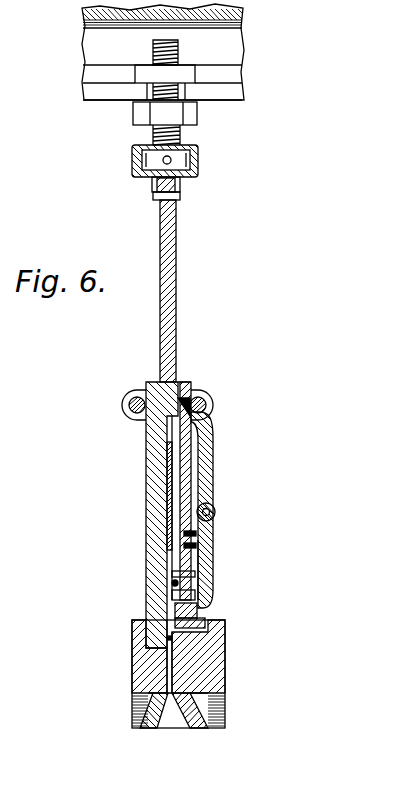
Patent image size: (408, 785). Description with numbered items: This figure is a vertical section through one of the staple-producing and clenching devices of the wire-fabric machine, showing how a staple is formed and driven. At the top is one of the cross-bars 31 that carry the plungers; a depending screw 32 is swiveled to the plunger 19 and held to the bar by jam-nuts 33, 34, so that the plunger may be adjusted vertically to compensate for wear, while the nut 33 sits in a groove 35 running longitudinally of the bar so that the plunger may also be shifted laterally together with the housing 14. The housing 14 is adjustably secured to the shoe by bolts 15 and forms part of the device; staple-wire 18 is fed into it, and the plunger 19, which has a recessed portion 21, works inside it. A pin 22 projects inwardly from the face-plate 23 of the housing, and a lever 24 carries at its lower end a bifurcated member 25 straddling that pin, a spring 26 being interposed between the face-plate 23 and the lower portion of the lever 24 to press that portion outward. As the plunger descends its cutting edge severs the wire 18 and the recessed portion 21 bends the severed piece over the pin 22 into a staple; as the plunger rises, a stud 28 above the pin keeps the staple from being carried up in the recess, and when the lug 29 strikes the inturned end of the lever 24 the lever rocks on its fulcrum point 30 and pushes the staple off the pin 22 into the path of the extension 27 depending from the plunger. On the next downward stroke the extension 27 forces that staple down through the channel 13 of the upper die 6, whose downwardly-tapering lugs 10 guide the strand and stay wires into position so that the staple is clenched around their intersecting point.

The upper die 6 is at (140, 663).
The downwardly-tapering lugs 10 is at (198, 722).
The channel 13 is at (170, 675).
The housing 14 is at (147, 527).
The bolts 15 is at (128, 405).
The staple-wire 18 is at (172, 583).
The plunger 19 is at (163, 333).
The recessed portion 21 is at (172, 477).
The pin 22 is at (172, 598).
The face-plate 23 is at (193, 462).
The lever 24 is at (213, 488).
The bifurcated member 25 is at (172, 605).
The spring 26 is at (208, 563).
The extension 27 is at (167, 540).
The stud 28 is at (172, 572).
The lug 29 is at (193, 388).
The fulcrum point 30 is at (216, 511).
The cross-bar 31 is at (92, 40).
The screw 32 is at (153, 137).
The jam-nut 33 is at (145, 78).
The jam-nut 34 is at (192, 120).
The groove 35 is at (95, 78).